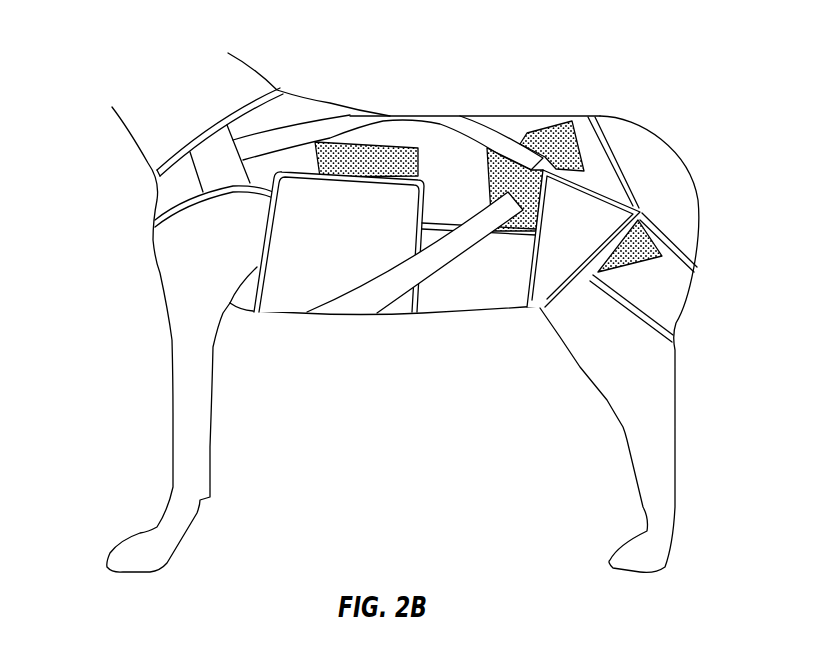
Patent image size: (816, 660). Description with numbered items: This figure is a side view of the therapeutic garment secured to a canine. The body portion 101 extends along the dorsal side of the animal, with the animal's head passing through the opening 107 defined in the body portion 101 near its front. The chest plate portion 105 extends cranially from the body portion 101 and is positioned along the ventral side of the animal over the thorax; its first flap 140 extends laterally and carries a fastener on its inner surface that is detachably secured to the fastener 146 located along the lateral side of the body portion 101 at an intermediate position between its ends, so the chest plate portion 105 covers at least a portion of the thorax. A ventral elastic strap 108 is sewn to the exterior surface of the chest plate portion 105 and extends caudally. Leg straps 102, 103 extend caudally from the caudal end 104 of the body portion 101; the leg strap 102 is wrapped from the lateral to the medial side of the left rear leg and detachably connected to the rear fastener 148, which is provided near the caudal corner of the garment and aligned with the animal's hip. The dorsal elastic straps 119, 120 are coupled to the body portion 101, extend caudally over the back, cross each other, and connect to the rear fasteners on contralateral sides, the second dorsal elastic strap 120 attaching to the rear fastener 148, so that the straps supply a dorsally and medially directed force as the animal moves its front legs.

The body portion 101 is at (445, 155).
The leg strap 102 is at (568, 260).
The leg strap 103 is at (313, 128).
The caudal end 104 is at (603, 150).
The chest plate portion 105 is at (165, 195).
The opening 107 is at (247, 103).
The ventral elastic strap 108 is at (433, 263).
The first dorsal elastic strap 119 is at (413, 117).
The second dorsal elastic strap 120 is at (500, 137).
The first flap 140 is at (330, 253).
The fastener 146 is at (360, 157).
The rear fastener 148 is at (567, 127).